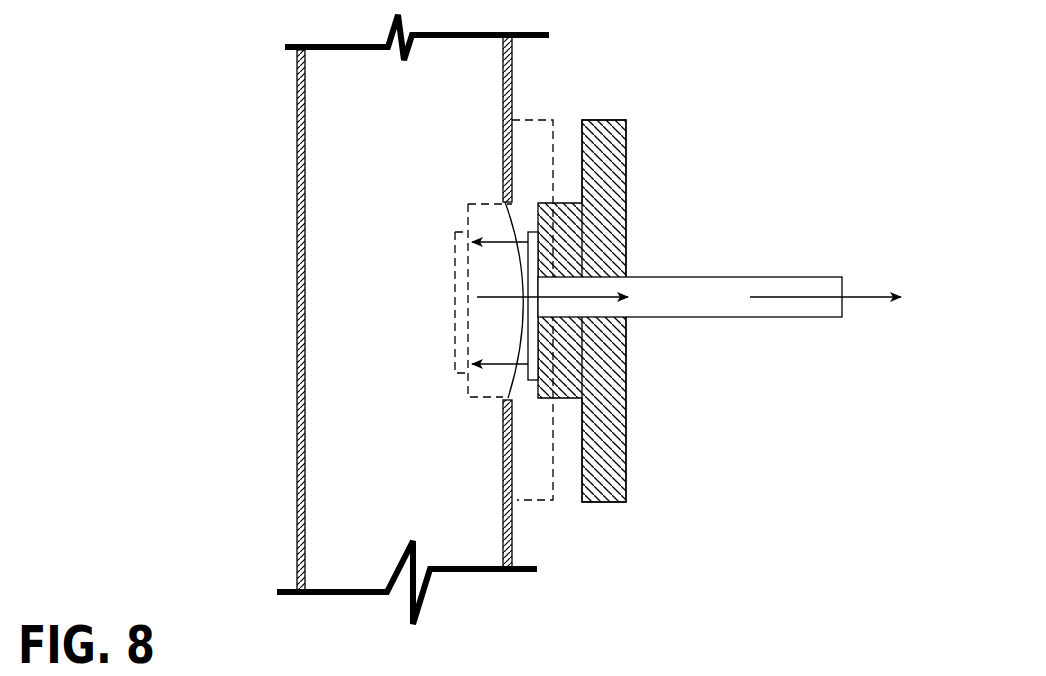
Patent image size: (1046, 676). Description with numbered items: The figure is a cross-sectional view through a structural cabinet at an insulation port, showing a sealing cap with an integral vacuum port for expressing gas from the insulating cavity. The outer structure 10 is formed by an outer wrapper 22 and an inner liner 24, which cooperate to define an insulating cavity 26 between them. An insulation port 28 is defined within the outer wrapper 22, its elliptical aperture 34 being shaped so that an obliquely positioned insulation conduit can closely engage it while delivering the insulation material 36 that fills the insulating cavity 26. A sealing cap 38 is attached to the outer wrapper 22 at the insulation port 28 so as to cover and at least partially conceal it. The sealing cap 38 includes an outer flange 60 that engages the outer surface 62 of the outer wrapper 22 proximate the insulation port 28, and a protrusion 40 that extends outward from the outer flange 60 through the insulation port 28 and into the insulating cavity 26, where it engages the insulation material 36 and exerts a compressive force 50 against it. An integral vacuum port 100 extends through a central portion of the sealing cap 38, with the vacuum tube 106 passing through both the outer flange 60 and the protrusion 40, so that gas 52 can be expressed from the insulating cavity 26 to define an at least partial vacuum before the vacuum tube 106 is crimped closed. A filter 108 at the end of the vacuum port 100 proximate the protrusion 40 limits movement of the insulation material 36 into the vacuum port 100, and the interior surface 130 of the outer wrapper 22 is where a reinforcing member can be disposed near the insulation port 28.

The outer structure 10 is at (279, 151).
The outer wrapper 22 is at (510, 62).
The inner liner 24 is at (298, 86).
The insulating cavity 26 is at (350, 274).
The insulation port 28 is at (529, 181).
The elliptical aperture 34 is at (507, 398).
The insulation material 36 is at (362, 172).
The sealing cap 38 is at (630, 167).
The protrusion 40 is at (562, 377).
The compressive force 50 is at (483, 240).
The gas 52 is at (858, 298).
The outer flange 60 is at (613, 120).
The outer surface 62 is at (508, 545).
The vacuum port 100 is at (717, 274).
The vacuum tube 106 is at (703, 318).
The filter 108 is at (530, 403).
The interior surface 130 is at (503, 540).